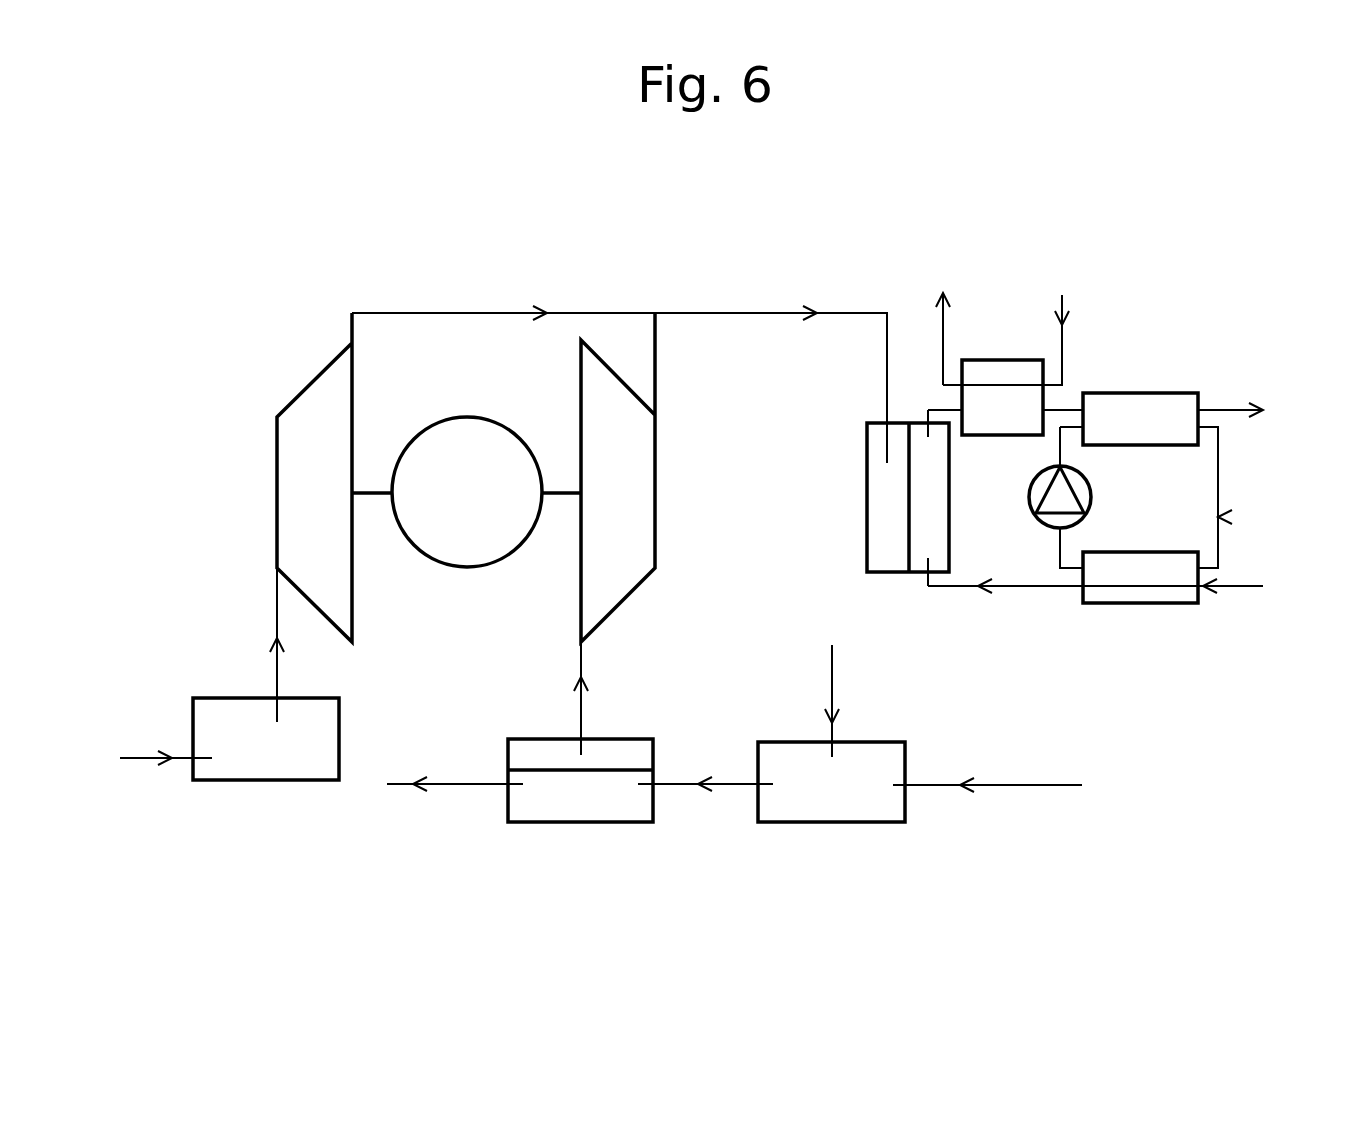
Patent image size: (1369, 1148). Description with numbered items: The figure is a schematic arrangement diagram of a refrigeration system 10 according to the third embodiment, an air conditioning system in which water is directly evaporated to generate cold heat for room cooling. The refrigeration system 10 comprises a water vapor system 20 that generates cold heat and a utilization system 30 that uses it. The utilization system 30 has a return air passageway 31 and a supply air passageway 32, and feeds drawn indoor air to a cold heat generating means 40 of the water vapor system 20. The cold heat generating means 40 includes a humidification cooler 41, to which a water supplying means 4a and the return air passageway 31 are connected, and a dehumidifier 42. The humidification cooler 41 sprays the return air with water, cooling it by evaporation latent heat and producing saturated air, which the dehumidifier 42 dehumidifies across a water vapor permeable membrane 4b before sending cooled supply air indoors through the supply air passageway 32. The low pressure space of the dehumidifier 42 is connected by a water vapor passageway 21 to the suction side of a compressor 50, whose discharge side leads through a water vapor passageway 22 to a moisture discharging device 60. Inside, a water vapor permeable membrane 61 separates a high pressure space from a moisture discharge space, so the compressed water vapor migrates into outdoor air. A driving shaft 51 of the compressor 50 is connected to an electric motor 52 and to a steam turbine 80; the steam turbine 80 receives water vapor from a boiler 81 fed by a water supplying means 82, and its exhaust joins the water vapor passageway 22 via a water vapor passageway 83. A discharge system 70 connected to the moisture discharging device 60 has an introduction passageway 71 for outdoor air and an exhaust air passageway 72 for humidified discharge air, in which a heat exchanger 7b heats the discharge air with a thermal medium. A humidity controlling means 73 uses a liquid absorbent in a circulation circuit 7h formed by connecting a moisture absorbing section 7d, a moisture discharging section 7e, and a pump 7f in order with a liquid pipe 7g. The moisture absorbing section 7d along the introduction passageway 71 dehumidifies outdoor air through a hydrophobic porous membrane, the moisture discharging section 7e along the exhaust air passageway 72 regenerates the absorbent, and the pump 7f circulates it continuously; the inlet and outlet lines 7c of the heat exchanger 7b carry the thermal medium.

The refrigeration system 10 is at (458, 439).
The water vapor system 20 is at (774, 333).
The water vapor passageway 21 is at (581, 660).
The water vapor passageway 22 is at (750, 313).
The utilization system 30 is at (1001, 785).
The return air passageway 31 is at (1020, 785).
The supply air passageway 32 is at (455, 784).
The cold heat generating means 40 is at (605, 815).
The humidification cooler 41 is at (842, 822).
The dehumidifier 42 is at (565, 822).
The water supplying means 4a is at (833, 680).
The water vapor permeable membrane 4b is at (620, 770).
The compressor 50 is at (655, 505).
The driving shaft 51 is at (556, 503).
The electric motor 52 is at (432, 560).
The moisture discharging device 60 is at (859, 497).
The water vapor permeable membrane 61 is at (909, 515).
The discharge system 70 is at (1136, 473).
The introduction passageway 71 is at (1020, 586).
The exhaust air passageway 72 is at (1218, 405).
The humidity controlling means 73 is at (1162, 606).
The heat exchanger 7b is at (998, 435).
The fluid inlet/outlet pipe 7c is at (1062, 340).
The moisture absorbing section 7d is at (1122, 603).
The moisture discharging section 7e is at (1140, 393).
The pump 7f is at (1091, 487).
The liquid pipe 7g is at (1218, 453).
The circulation circuit 7h is at (1218, 517).
The steam turbine 80 is at (277, 478).
The boiler 81 is at (225, 698).
The water supplying means 82 is at (135, 760).
The water vapor passageway 83 is at (455, 313).